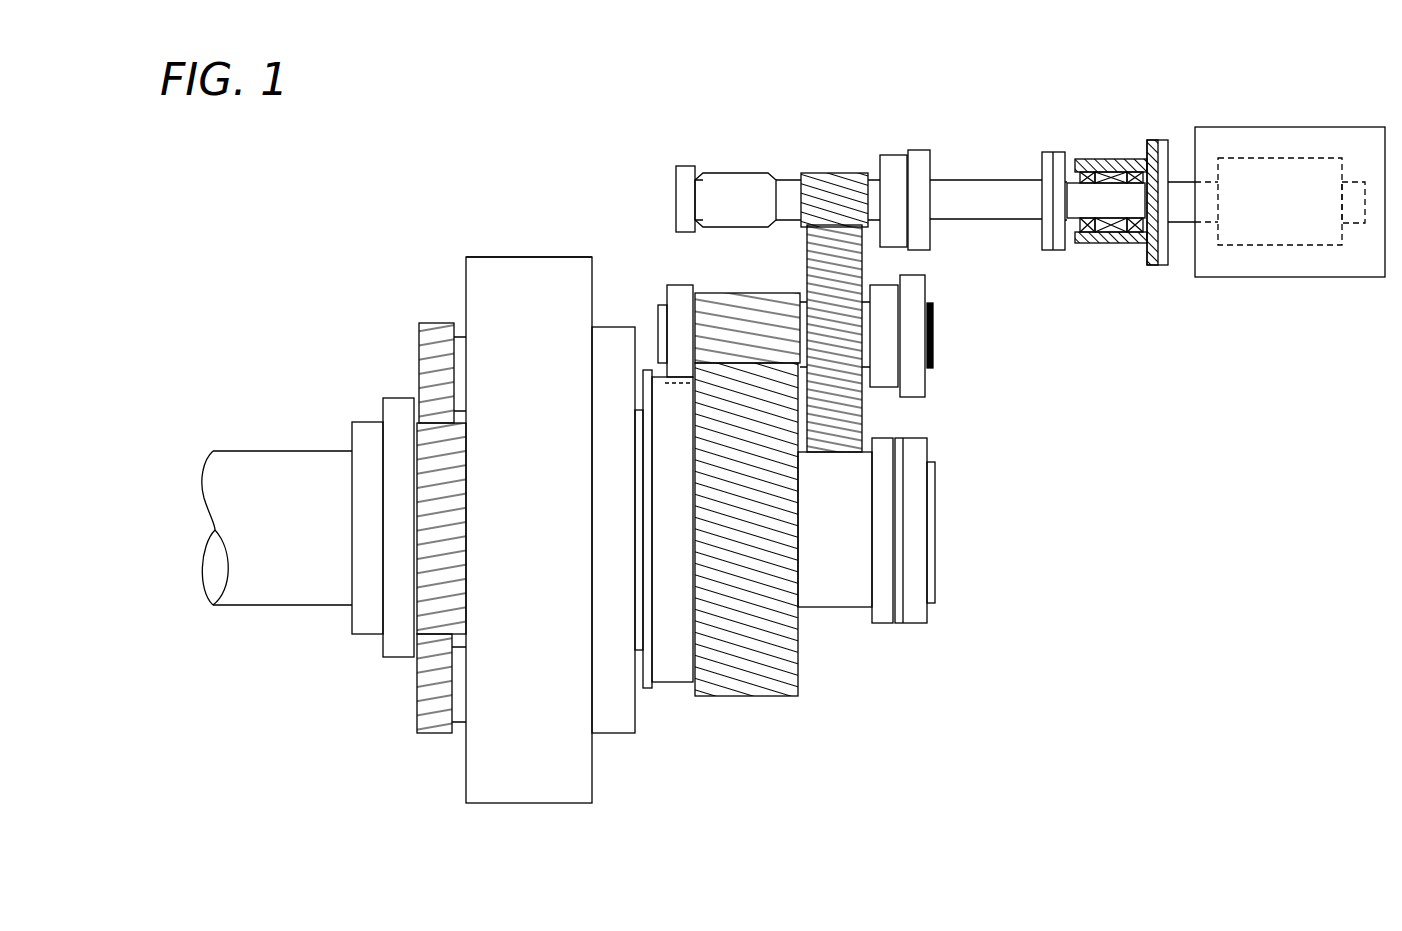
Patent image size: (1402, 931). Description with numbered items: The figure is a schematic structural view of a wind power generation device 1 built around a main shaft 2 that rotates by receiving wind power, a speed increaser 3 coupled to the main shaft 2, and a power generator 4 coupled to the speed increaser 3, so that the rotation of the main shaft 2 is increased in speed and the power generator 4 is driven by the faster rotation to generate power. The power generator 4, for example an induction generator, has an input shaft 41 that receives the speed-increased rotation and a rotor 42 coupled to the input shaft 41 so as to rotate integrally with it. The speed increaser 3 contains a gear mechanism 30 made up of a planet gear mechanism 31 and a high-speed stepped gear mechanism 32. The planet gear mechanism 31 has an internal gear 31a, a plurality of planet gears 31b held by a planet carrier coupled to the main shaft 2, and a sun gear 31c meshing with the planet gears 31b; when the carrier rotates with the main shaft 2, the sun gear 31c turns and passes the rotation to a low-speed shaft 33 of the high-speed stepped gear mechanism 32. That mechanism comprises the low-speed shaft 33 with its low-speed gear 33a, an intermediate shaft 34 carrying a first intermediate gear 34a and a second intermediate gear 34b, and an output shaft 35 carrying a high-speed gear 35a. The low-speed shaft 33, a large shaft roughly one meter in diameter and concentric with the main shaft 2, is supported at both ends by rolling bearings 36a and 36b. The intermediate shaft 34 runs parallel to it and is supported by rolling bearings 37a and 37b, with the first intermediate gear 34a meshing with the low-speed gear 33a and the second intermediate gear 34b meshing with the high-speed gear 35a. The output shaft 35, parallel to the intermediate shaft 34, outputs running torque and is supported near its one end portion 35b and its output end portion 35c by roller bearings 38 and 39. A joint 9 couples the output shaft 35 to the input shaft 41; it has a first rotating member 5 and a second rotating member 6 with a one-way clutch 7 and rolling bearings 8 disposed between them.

The wind power generation device 1 is at (1180, 102).
The main shaft 2 is at (243, 462).
The speed increaser 3 is at (524, 208).
The power generator 4 is at (1290, 243).
The first rotating member 5 is at (1100, 193).
The second rotating member 6 is at (1115, 159).
The one-way clutch 7 is at (1110, 233).
The rolling bearings 8 is at (1082, 244).
The joint 9 is at (1118, 246).
The gear mechanism 30 is at (446, 266).
The planet gear mechanism 31 is at (554, 254).
The internal gear 31a is at (495, 265).
The planet gears 31b is at (427, 345).
The sun gear 31c is at (425, 470).
The high-speed stepped gear mechanism 32 is at (822, 136).
The low-speed shaft 33 is at (783, 528).
The low-speed gear 33a is at (745, 690).
The intermediate shaft 34 is at (656, 303).
The first intermediate gear 34a is at (741, 298).
The second intermediate gear 34b is at (853, 262).
The output shaft 35 is at (741, 170).
The high-speed gear 35a is at (838, 172).
The one end portion 35b is at (718, 177).
The other end portion 35c is at (985, 180).
The rolling bearing 36a is at (672, 675).
The rolling bearing 36b is at (910, 625).
The rolling bearing 37a is at (680, 290).
The rolling bearing 37b is at (888, 302).
The roller bearing 38 is at (687, 170).
The roller bearing 39 is at (918, 150).
The input shaft 41 is at (1183, 226).
The rotor 42 is at (1317, 246).